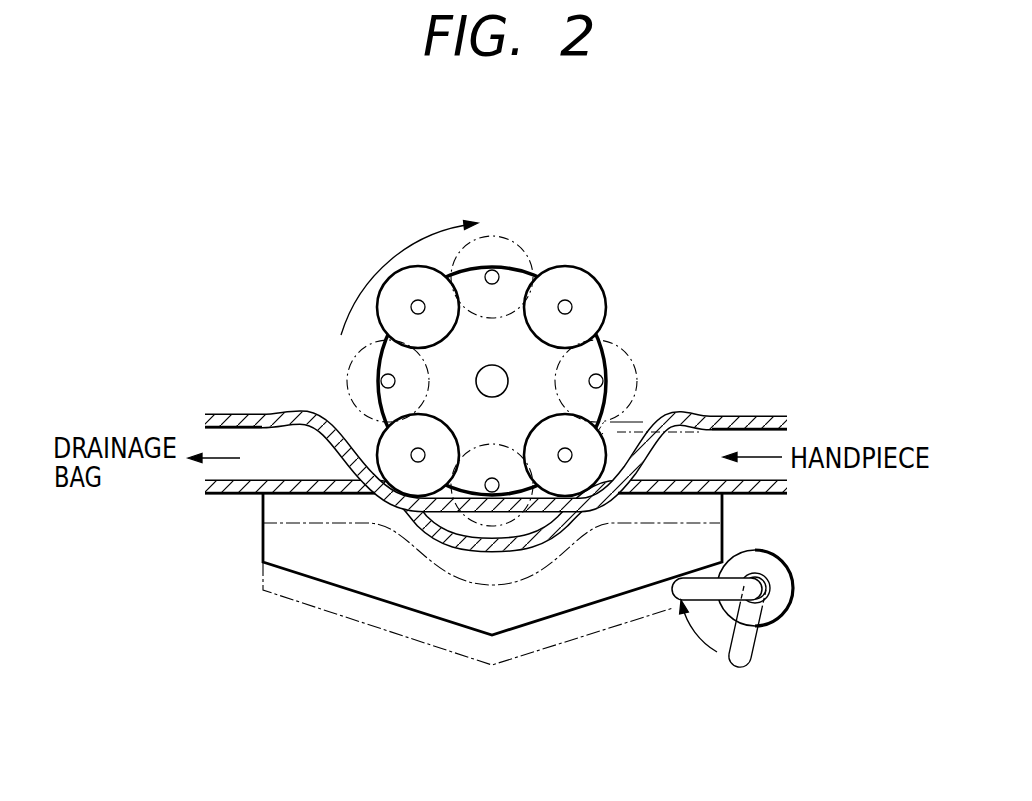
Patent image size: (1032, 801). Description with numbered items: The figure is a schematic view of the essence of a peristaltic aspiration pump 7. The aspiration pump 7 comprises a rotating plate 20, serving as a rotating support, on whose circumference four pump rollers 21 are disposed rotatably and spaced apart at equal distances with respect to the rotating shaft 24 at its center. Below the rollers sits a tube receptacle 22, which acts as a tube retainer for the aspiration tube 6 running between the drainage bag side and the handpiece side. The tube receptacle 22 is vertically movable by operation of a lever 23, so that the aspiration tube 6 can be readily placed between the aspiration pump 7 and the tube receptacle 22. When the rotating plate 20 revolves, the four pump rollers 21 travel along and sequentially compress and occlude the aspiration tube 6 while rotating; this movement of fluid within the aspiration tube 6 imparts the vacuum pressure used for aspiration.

The aspiration tube 6 is at (770, 413).
The aspiration pump 7 is at (642, 317).
The rotating plate 20 is at (443, 383).
The pump rollers 21 is at (583, 282).
The tube receptacle 22 is at (278, 543).
The lever 23 is at (766, 633).
The rotating shaft 24 is at (493, 373).